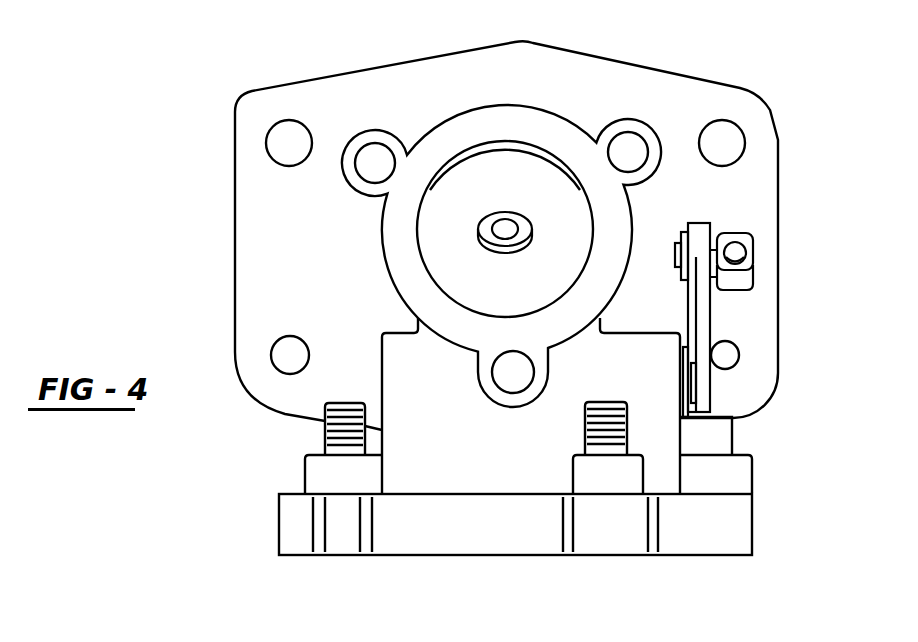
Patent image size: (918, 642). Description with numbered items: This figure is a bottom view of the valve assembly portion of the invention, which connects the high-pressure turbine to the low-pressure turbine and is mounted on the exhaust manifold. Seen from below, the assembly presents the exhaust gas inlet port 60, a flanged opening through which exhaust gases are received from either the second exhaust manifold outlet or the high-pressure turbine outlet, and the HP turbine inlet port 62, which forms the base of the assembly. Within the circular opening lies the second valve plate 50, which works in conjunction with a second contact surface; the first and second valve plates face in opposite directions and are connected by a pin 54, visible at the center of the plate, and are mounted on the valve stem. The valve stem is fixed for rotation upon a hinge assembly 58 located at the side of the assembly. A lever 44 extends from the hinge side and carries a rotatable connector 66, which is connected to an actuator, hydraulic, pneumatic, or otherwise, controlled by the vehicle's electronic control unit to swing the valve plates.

The HP turbine inlet port 62 is at (293, 1).
The exhaust gas inlet port 60 is at (557, 132).
The second valve plate 50 is at (518, 296).
The pin 54 is at (505, 229).
The hinge assembly 58 is at (718, 387).
The lever 44 is at (711, 318).
The rotatable connector 66 is at (753, 273).